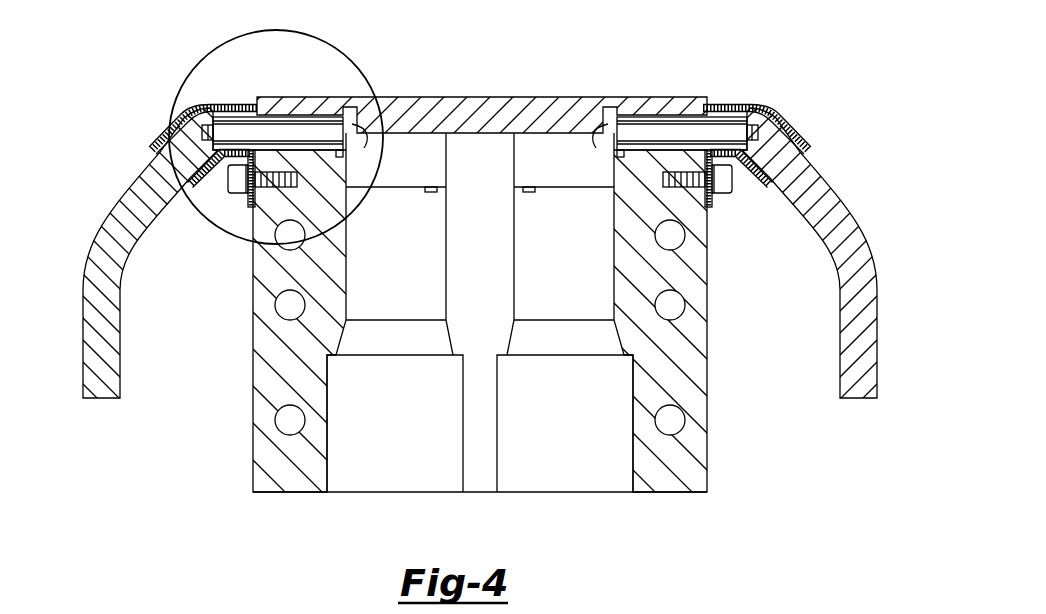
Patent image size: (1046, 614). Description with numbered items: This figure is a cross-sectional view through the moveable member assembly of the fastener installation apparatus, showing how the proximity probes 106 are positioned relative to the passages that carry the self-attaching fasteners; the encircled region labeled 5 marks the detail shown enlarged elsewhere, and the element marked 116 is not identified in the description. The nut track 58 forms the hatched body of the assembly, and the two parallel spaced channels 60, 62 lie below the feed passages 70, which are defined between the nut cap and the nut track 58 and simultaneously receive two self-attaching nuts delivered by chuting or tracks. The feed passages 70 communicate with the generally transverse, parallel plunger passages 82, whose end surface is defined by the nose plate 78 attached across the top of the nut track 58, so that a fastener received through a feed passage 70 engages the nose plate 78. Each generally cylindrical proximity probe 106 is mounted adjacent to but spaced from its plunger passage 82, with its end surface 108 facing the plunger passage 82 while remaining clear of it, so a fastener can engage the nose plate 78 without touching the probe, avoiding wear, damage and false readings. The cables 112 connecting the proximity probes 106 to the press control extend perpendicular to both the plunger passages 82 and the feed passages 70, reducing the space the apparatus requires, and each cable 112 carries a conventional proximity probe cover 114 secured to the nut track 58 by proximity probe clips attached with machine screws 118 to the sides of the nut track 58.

The detail circle for FIG. 5 is at (233, 38).
The nut track 58 is at (257, 472).
The channel 60 is at (561, 435).
The channel 62 is at (410, 435).
The feed passage 70 is at (405, 279).
The nose plate 78 is at (508, 97).
The plunger passage 82 is at (553, 170).
The proximity probe 106 is at (283, 127).
The end surface 108 is at (366, 118).
The cable 112 is at (120, 375).
The proximity probe cover 114 is at (172, 148).
The clamp flange 116 is at (253, 190).
The machine screw 118 is at (228, 178).